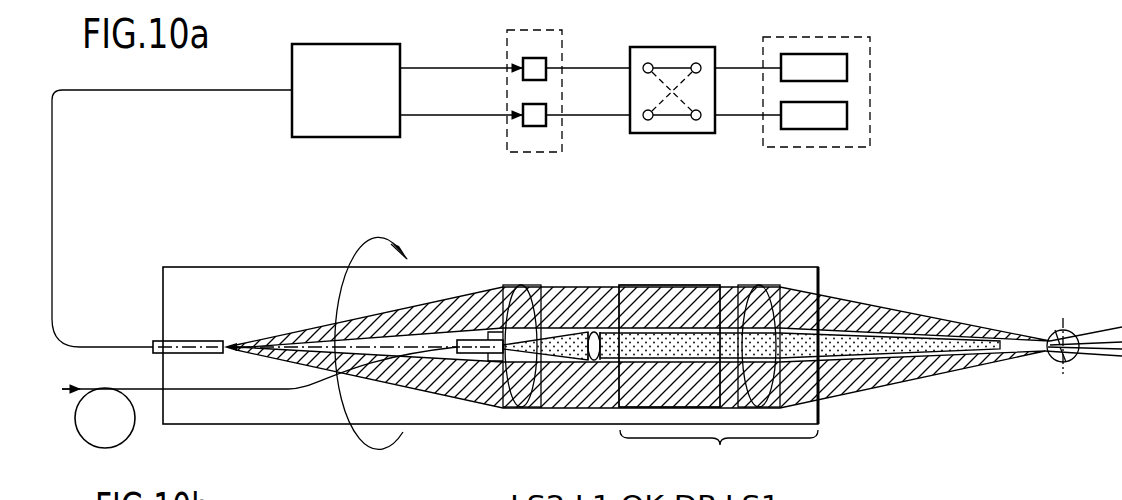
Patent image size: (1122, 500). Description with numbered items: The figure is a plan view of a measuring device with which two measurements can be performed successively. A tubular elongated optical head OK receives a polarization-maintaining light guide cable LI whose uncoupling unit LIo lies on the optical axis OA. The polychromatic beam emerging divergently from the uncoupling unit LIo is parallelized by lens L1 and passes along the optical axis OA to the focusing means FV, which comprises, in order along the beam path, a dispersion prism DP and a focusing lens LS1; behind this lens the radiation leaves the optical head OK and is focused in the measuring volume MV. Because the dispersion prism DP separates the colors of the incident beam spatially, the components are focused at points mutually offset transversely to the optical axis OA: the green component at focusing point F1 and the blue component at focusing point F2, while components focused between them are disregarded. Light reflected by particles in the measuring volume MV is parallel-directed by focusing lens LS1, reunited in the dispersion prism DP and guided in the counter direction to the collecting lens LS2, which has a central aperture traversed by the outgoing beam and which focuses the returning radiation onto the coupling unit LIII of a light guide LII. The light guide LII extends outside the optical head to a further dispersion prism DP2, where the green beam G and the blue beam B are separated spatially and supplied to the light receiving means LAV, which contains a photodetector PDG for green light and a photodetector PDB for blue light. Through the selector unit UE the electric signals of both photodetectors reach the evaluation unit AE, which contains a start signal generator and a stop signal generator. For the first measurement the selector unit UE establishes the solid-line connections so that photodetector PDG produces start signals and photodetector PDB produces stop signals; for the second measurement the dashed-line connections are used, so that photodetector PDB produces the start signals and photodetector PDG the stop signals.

The dispersion prism DP2 is at (349, 48).
The green beam G is at (1000, 358).
The blue beam B is at (1003, 332).
The light receiving means LAV is at (537, 33).
The photodetector for green light PDG is at (546, 62).
The photodetector for blue light PDB is at (546, 108).
The selector unit UE is at (676, 48).
The evaluation unit AE is at (816, 37).
The light guide LII is at (52, 175).
The coupling unit of light guide LII LIII is at (197, 341).
The optical axis OA is at (396, 347).
The collecting lens LS2 is at (525, 300).
The optical head OK is at (623, 275).
The dispersion prism DP is at (690, 295).
The focusing lens LS1 is at (752, 300).
The focusing point for blue light F2 is at (1056, 332).
The measuring volume MV is at (1072, 335).
The focusing point for green light F1 is at (1066, 362).
The light guide cable LI is at (283, 390).
The uncoupling unit LIo is at (463, 355).
The lens L1 is at (594, 360).
The focusing means FV is at (719, 453).